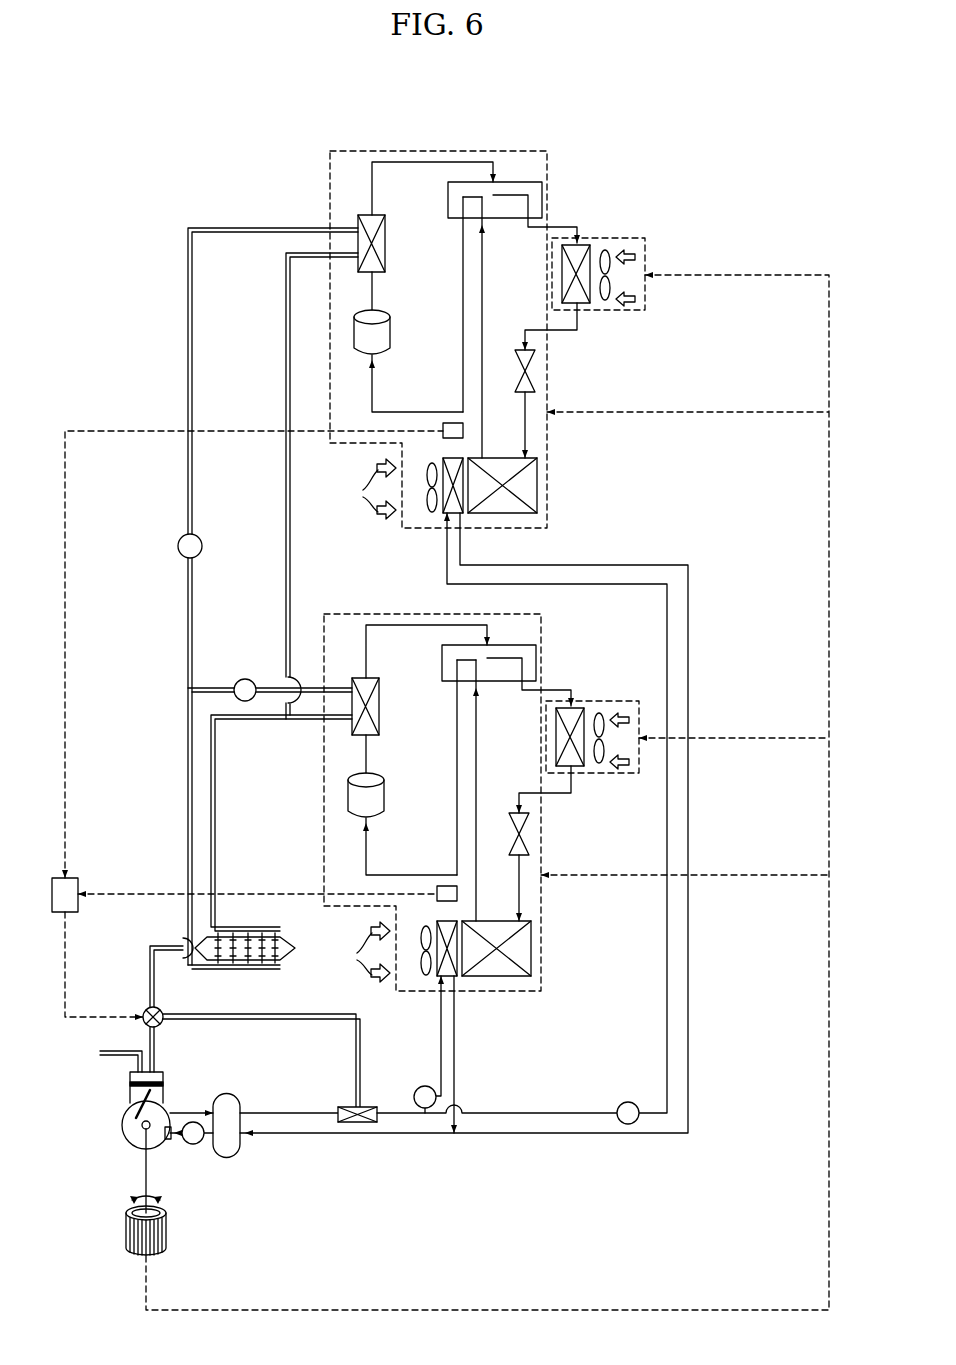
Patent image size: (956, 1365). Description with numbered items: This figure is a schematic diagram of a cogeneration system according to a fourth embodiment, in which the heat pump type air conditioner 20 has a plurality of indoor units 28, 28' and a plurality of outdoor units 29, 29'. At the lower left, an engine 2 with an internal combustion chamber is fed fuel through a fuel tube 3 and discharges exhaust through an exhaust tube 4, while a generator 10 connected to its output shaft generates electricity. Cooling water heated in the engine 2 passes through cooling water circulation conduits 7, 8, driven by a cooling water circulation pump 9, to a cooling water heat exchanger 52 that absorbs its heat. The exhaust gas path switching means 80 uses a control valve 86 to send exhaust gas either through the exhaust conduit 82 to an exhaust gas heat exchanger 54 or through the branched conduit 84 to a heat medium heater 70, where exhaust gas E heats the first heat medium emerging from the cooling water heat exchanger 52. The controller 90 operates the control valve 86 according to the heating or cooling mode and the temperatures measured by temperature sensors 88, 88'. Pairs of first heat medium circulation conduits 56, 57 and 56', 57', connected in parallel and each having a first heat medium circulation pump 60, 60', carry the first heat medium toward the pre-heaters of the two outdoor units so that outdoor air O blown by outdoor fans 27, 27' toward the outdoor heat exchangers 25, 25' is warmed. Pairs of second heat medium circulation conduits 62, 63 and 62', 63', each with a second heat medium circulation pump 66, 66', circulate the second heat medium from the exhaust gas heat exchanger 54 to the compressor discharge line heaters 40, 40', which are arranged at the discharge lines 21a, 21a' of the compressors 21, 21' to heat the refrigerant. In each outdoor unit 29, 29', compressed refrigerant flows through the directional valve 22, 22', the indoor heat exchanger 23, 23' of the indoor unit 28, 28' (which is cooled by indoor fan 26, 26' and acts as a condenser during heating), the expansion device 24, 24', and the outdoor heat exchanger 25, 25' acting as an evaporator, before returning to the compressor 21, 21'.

The heat pump type air conditioner 20 is at (582, 120).
The outdoor unit 29' is at (438, 313).
The outdoor unit 29 is at (430, 776).
The compressor discharge line heater 40' is at (414, 361).
The compressor discharge line heater 40 is at (409, 824).
The directional valve 22' is at (520, 194).
The directional valve 22 is at (512, 657).
The indoor heat exchanger 23' is at (586, 248).
The indoor heat exchanger 23 is at (579, 711).
The indoor unit 28' is at (600, 240).
The indoor unit 28 is at (592, 703).
The indoor fan 26' is at (626, 303).
The indoor fan 26 is at (619, 766).
The discharge line 21a' is at (412, 291).
The discharge line 21a is at (404, 754).
The compressor 21' is at (400, 338).
The compressor 21 is at (392, 801).
The expansion device 24' is at (556, 371).
The expansion device 24 is at (549, 834).
The temperature sensor 88' is at (515, 431).
The temperature sensor 88 is at (507, 894).
The outdoor heat exchanger 25' is at (538, 485).
The outdoor heat exchanger 25 is at (530, 948).
The outdoor fan 27' is at (416, 511).
The outdoor fan 27 is at (411, 974).
The outdoor air O is at (367, 720).
The controller 90 is at (78, 880).
The second heat medium circulation conduit 62' is at (235, 596).
The second heat medium circulation conduit 63' is at (292, 486).
The second heat medium circulation pump 66' is at (149, 546).
The second heat medium circulation conduit 62 is at (270, 650).
The second circulation pump 66 is at (252, 668).
The second heat medium circulation conduit 63 is at (281, 823).
The exhaust gas heat exchanger 54 is at (240, 962).
The exhaust conduit 82 is at (150, 962).
The control valve 86 is at (162, 1010).
The exhaust gas path switching means 80 is at (138, 1007).
The branched conduit 84 is at (285, 1019).
The exhaust tube 4 is at (182, 1033).
The fuel tube 3 is at (113, 1053).
The engine 2 is at (124, 1130).
The cooling water circulation conduit 8 is at (187, 1110).
The cooling water circulation pump 9 is at (191, 1146).
The cooling water heat exchanger 52 is at (236, 1095).
The cooling water circulation conduit 7 is at (213, 1150).
The generator 10 is at (140, 1257).
The first heat medium circulation conduit 57 is at (289, 1165).
The first heat medium circulation conduit 56 is at (464, 861).
The heat medium heater 70 is at (365, 1107).
The exhaust gas E is at (340, 1123).
The first heat medium circulation conduit 57' is at (522, 813).
The first circulation pump 60 is at (458, 1044).
The first heat medium circulation pump 60' is at (611, 1090).
The first heat medium circulation conduit 56' is at (583, 1161).